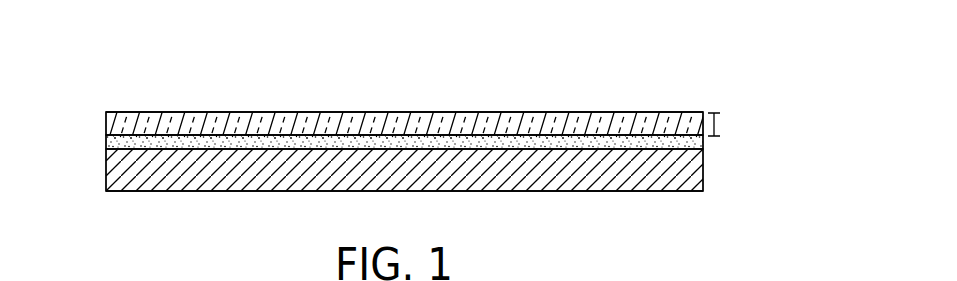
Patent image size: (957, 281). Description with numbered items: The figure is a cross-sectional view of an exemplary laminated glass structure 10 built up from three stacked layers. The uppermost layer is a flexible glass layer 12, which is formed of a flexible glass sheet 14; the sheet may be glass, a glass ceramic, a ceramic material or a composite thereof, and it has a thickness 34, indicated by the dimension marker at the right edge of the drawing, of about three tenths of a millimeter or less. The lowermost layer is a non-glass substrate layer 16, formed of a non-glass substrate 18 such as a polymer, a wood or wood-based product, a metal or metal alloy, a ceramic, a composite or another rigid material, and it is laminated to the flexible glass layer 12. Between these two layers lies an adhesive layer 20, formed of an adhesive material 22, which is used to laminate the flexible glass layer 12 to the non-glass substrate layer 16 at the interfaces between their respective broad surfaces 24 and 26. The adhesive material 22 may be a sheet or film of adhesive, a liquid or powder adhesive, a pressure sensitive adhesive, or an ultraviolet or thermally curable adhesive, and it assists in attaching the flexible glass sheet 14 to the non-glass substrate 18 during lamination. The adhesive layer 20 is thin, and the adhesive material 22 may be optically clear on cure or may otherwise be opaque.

The laminated glass structure 10 is at (757, 107).
The flexible glass layer 12 is at (101, 118).
The flexible glass sheet 14 is at (427, 124).
The non-glass substrate layer 16 is at (101, 170).
The non-glass substrate 18 is at (610, 172).
The adhesive layer 20 is at (710, 143).
The adhesive material 22 is at (598, 140).
The broad surface 24 is at (305, 135).
The broad surface 26 is at (312, 149).
The thickness 34 is at (717, 125).